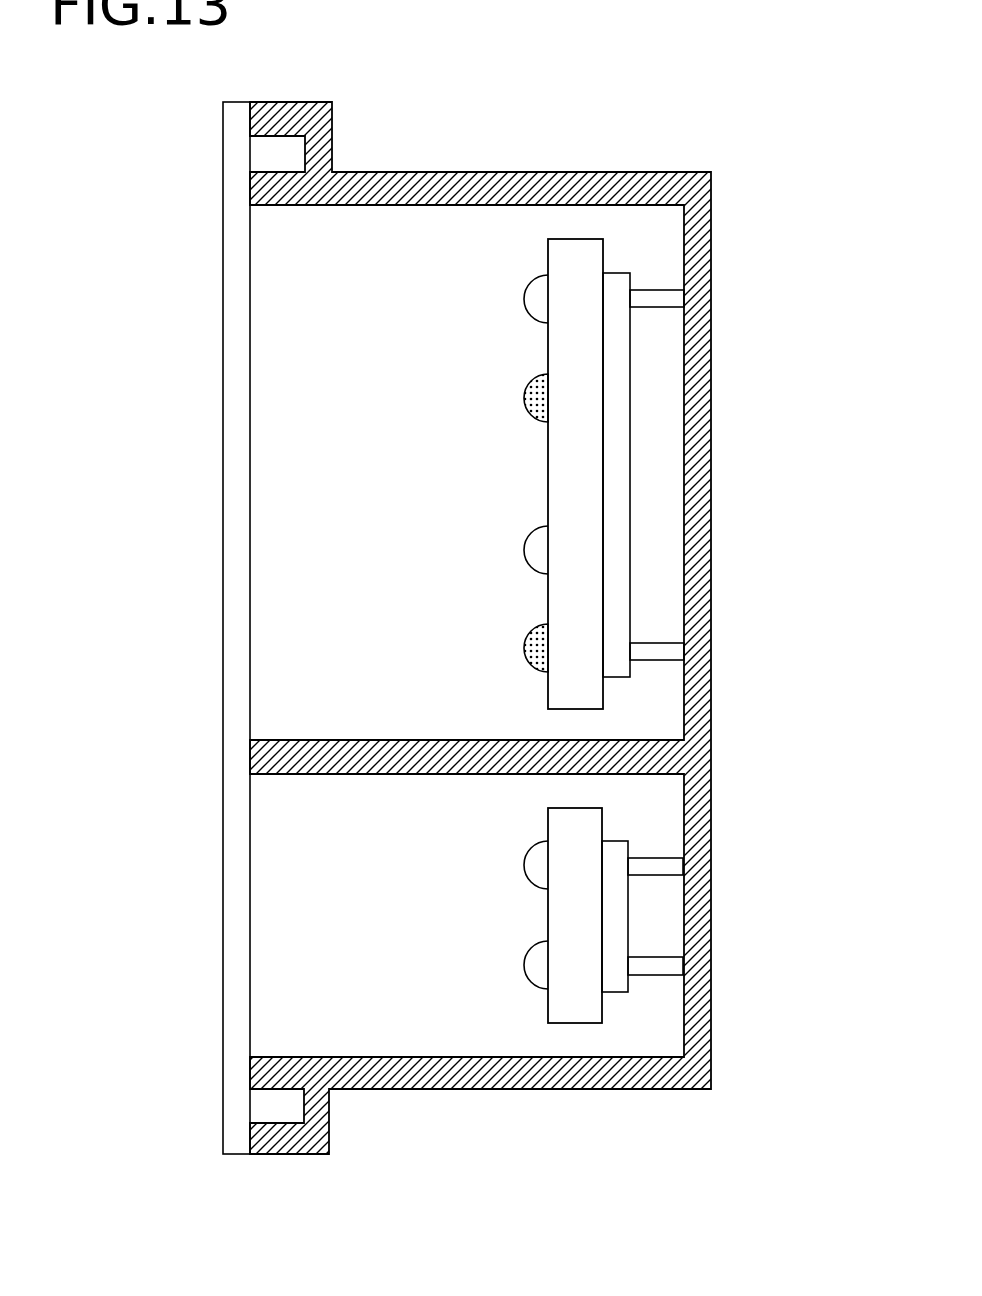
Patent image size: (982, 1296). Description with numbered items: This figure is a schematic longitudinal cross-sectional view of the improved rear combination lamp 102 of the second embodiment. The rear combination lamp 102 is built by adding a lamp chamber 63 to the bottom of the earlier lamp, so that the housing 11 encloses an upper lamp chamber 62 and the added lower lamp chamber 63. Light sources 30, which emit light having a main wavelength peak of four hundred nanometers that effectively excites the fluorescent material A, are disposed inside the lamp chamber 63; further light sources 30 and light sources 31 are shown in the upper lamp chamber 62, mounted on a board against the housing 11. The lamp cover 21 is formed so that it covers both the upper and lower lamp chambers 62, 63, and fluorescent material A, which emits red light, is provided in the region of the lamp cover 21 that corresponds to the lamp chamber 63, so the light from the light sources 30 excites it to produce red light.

The housing 11 is at (712, 285).
The lamp cover 21 is at (222, 322).
The light source 30 is at (527, 285).
The colored light emitting diode 31 is at (527, 388).
The upper lamp chamber 62 is at (443, 220).
The lamp chamber 63 is at (383, 995).
The rear combination lamp 102 is at (799, 1083).